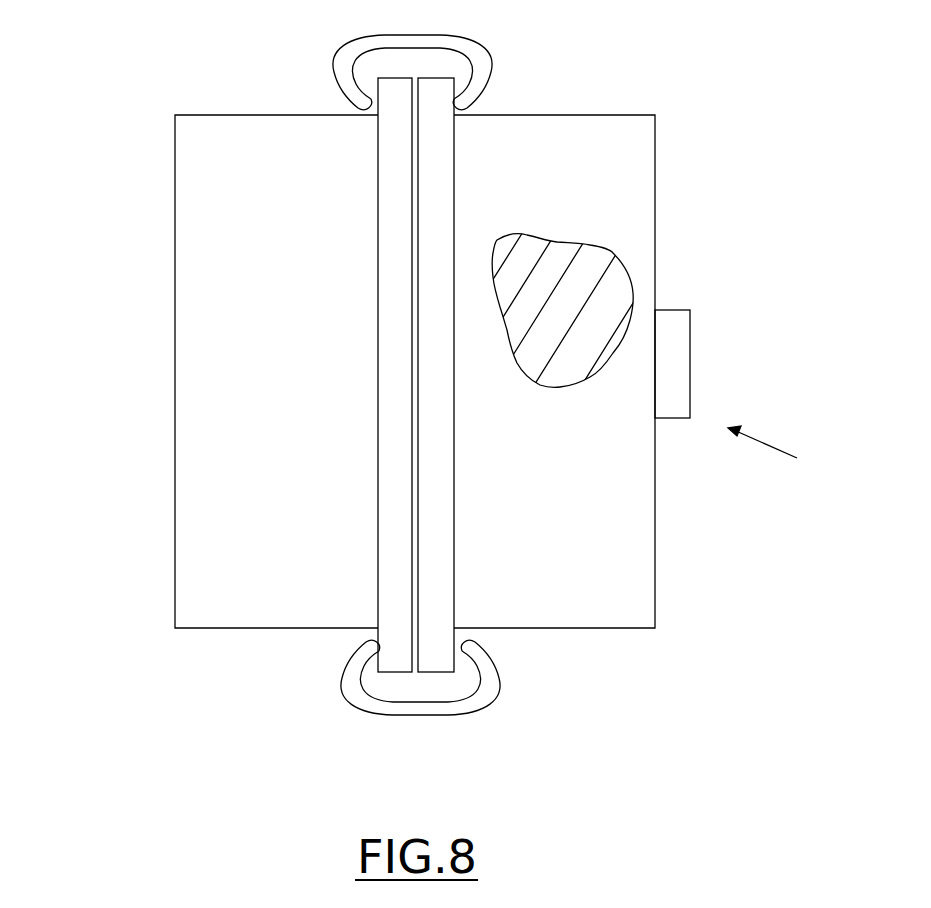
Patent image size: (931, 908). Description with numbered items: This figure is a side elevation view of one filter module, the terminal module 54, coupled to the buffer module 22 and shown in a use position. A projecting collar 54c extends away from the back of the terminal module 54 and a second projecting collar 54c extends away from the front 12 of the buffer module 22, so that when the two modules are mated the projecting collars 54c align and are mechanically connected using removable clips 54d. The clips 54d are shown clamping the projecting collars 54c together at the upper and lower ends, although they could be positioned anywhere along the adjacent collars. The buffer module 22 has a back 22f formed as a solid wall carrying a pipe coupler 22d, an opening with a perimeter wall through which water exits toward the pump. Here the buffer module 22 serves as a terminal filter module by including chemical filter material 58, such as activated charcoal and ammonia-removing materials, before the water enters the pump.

The front 12 is at (436, 378).
The buffer module 22 is at (505, 371).
The pipe coupler 22d is at (671, 353).
The back 22f is at (781, 455).
The terminal module 54 is at (392, 378).
The projecting collar 54c is at (388, 205).
The removable clip 54d is at (343, 52).
The chemical filter material 58 is at (591, 258).